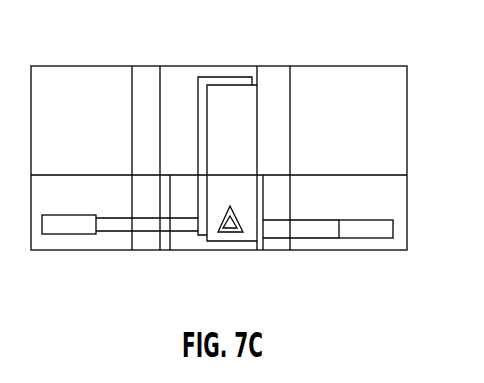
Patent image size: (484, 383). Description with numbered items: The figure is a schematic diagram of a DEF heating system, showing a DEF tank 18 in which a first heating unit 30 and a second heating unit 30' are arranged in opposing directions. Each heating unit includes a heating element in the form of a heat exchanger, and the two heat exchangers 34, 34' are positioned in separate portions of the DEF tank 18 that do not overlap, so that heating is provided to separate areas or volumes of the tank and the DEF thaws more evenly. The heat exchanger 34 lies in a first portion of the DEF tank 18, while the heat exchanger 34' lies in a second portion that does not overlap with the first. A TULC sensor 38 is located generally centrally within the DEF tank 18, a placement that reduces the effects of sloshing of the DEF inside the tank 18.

The DEF tank 18 is at (318, 65).
The first heating unit 30 is at (276, 163).
The second heating unit 30' is at (197, 132).
The heat exchanger 34 is at (328, 271).
The heat exchanger 34' is at (120, 255).
The TULC sensor 38 is at (229, 233).